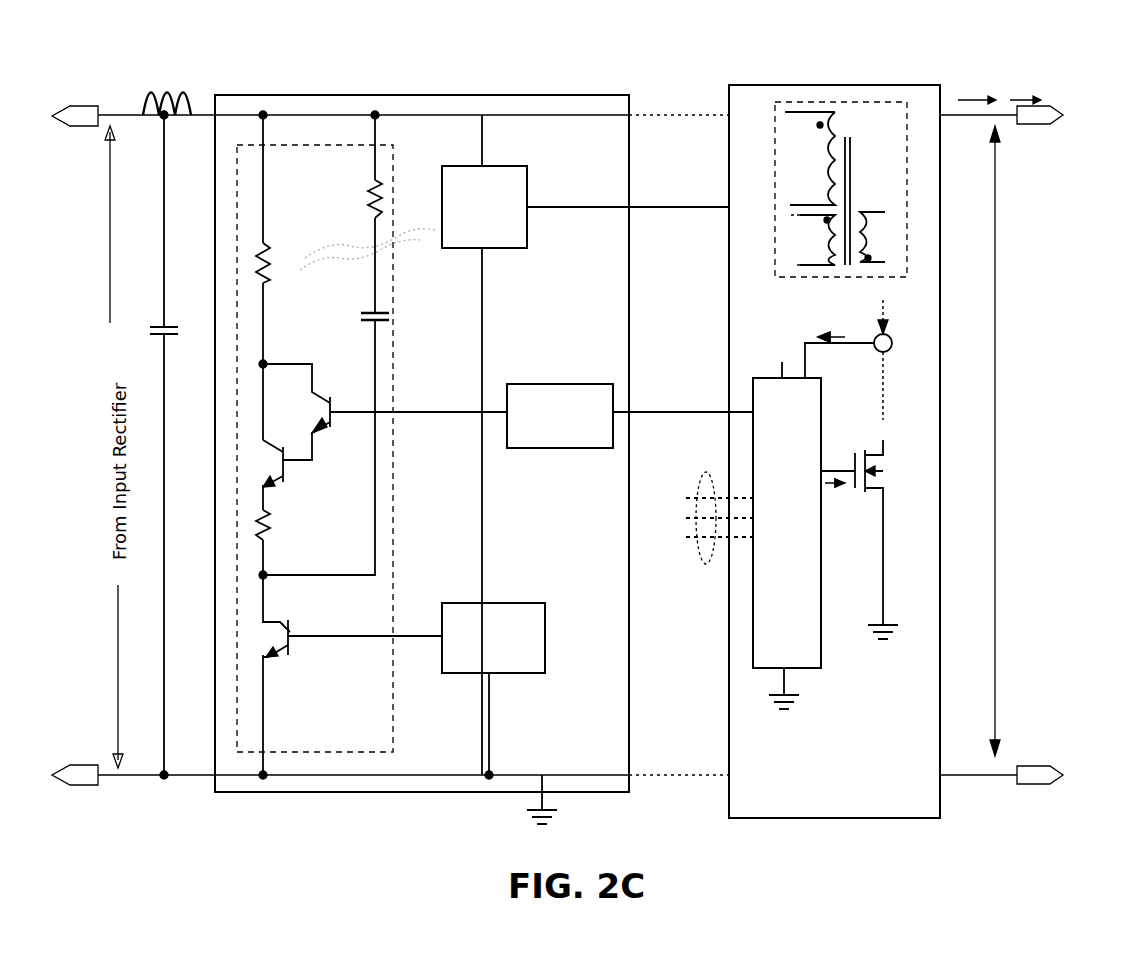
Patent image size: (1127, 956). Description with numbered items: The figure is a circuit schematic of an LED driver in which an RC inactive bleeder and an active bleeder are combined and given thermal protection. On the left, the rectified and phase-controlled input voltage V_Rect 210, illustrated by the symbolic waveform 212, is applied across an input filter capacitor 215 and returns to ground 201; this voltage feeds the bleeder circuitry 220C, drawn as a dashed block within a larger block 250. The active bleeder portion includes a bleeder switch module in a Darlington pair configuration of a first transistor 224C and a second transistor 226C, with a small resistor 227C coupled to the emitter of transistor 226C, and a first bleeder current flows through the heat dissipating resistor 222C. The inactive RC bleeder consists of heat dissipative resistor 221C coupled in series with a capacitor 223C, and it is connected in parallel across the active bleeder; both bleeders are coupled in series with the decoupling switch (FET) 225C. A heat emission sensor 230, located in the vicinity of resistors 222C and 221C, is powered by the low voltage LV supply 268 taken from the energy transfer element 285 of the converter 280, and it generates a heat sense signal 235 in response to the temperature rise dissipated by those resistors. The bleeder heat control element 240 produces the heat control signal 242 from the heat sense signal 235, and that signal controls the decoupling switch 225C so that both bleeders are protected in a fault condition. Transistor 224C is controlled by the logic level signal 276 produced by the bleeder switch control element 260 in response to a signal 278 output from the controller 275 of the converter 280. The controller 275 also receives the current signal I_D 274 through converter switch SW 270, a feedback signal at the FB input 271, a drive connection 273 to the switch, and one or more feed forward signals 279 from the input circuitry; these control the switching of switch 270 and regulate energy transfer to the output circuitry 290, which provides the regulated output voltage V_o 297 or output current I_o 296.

The ground 201 is at (560, 821).
The rectified voltage V_Rect 210 is at (108, 84).
The symbolic waveform 212 is at (168, 84).
The input filter capacitor 215 is at (168, 318).
The bleeder circuitry 220C is at (290, 142).
The heat dissipative resistor 221C is at (385, 188).
The heat dissipating resistor 222C is at (300, 230).
The capacitor 223C is at (383, 318).
The transistor Q1 224C is at (318, 394).
The decoupling switch (FET) 225C is at (293, 630).
The transistor Q2 226C is at (287, 470).
The small resistor 227C is at (270, 522).
The heat emission sensor 230 is at (483, 165).
The heat sense signal 235 is at (485, 350).
The bleeder heat control element 240 is at (490, 603).
The heat control signal 242 is at (388, 636).
The bleeder module 250 is at (380, 100).
The bleeder switch control element 260 is at (562, 384).
The low voltage LV supply 268 is at (586, 190).
The converter switch SW 270 is at (885, 486).
The feedback input 271 is at (782, 342).
The drive signal 273 is at (832, 494).
The current signal I_D 274 is at (840, 337).
The controller 275 is at (762, 378).
The logic level signal 276 is at (408, 412).
The signal 278 is at (688, 412).
The feed forward signals 279 is at (698, 488).
The converter 280 is at (770, 85).
The energy transfer element 285 is at (764, 150).
The output circuitry 290 is at (1022, 426).
The output current I_o 296 is at (1046, 84).
The output voltage V_o 297 is at (1080, 115).